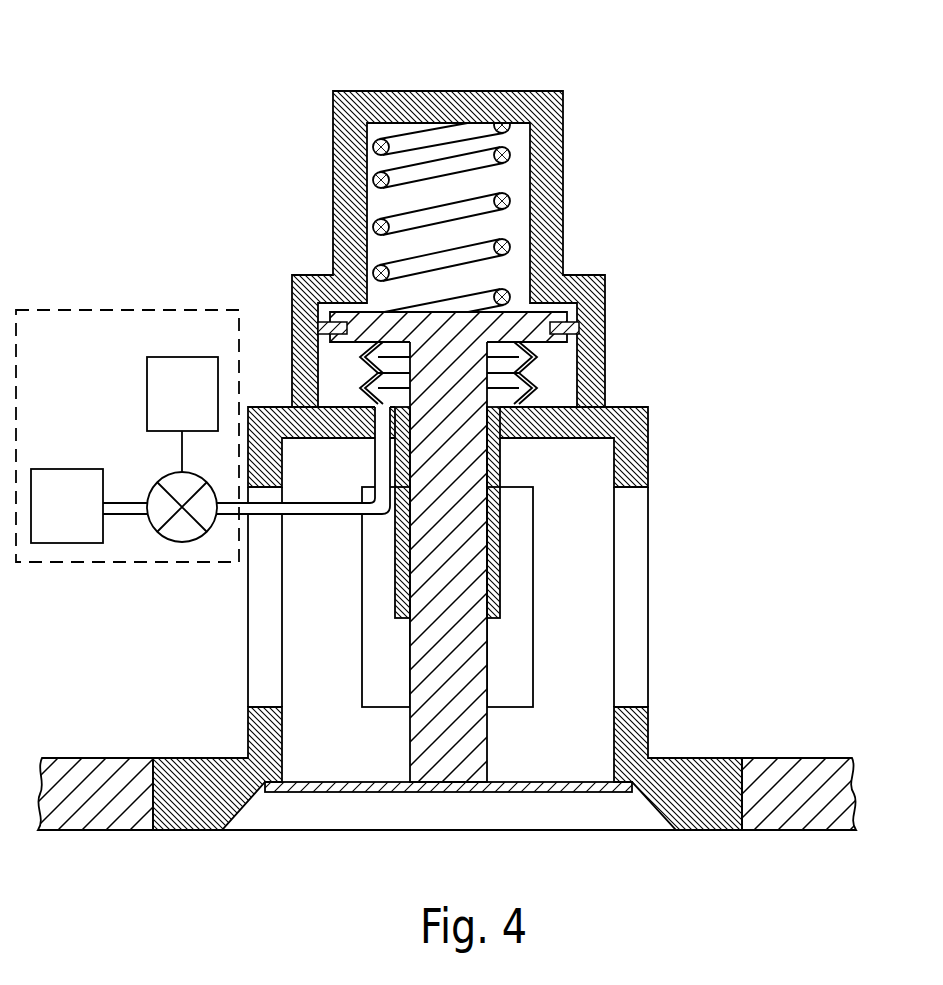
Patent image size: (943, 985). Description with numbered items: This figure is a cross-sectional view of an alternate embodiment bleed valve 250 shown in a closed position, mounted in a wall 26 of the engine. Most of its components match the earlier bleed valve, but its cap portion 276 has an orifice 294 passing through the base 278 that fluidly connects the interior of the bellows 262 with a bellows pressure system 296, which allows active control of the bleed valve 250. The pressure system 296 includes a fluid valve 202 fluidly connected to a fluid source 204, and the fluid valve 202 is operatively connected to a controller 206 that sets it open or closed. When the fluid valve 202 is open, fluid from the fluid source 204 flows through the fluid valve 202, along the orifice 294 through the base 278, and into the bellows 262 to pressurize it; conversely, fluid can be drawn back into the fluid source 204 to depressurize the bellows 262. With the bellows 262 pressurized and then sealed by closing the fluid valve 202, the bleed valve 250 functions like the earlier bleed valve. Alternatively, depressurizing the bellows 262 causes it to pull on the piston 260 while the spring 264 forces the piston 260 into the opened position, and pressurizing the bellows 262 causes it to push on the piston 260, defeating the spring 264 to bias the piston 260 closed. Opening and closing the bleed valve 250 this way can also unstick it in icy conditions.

The bleed valve 250 is at (447, 422).
The cap portion 276 is at (708, 88).
The spring 264 is at (484, 198).
The bellows 262 is at (360, 363).
The orifice 294 is at (375, 422).
The base 278 is at (311, 445).
The piston 260 is at (488, 750).
The wall 26 is at (782, 757).
The bellows pressure system 296 is at (127, 404).
The fluid valve 202 is at (153, 488).
The fluid source 204 is at (52, 469).
The controller 206 is at (147, 383).